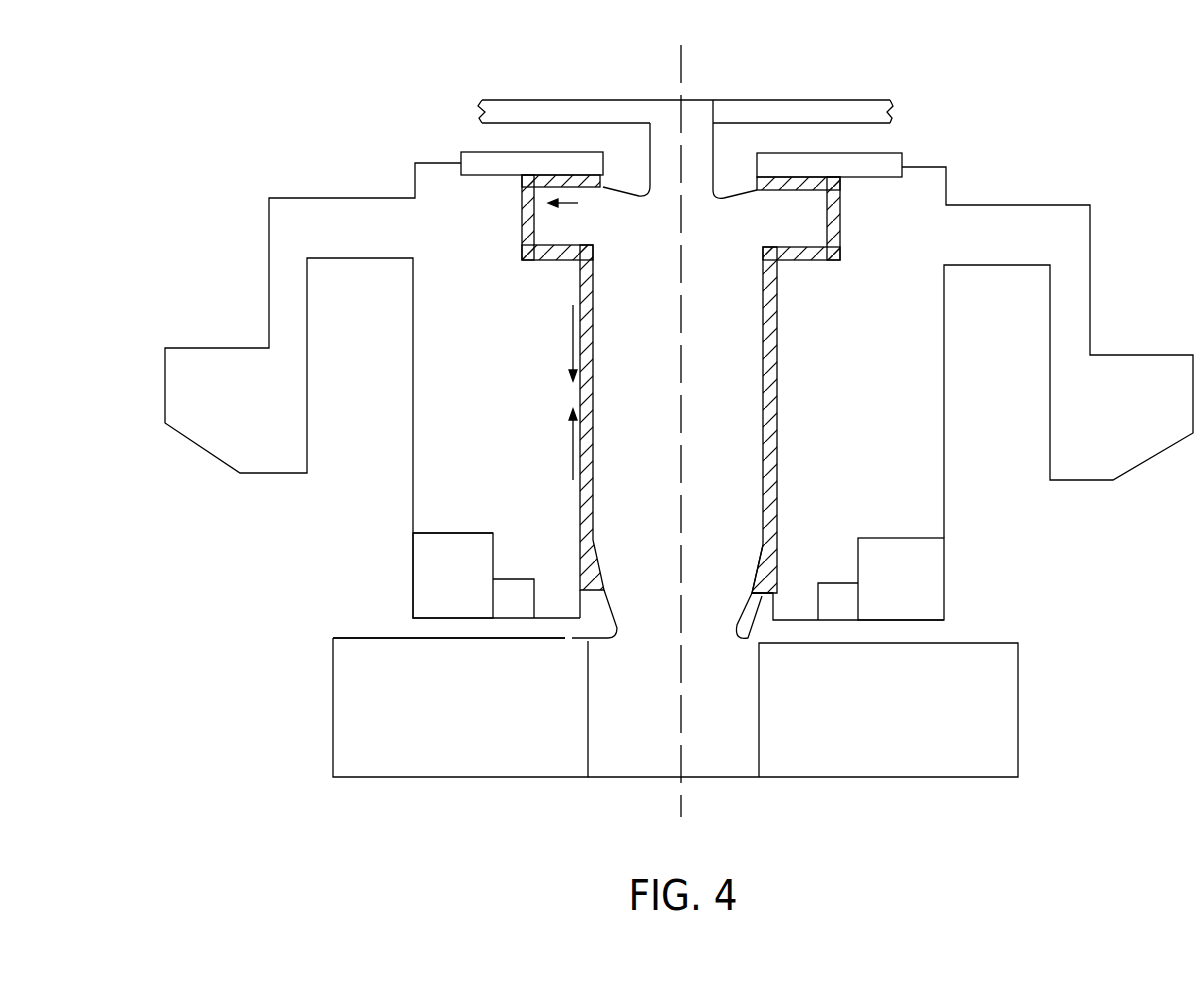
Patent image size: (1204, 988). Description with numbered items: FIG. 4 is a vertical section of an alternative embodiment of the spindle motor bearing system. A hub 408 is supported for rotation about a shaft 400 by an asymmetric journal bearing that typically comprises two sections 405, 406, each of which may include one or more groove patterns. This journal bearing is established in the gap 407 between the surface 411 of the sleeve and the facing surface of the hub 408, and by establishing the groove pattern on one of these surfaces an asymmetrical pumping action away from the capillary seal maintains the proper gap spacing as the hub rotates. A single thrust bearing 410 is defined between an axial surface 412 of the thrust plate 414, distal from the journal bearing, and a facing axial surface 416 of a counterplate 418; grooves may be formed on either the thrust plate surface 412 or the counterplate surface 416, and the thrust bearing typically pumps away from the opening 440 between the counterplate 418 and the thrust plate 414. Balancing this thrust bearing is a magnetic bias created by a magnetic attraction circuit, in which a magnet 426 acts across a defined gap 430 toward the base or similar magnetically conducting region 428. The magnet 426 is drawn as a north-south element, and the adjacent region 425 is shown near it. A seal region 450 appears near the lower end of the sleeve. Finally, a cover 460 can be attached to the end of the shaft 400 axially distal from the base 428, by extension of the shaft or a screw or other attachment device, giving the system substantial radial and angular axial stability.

The shaft 400 is at (730, 752).
The journal bearing section 405 is at (577, 348).
The journal bearing section 406 is at (575, 457).
The gap 407 is at (588, 288).
The hub 408 is at (360, 238).
The thrust bearing 410 is at (578, 204).
The surface of sleeve 411 is at (760, 565).
The axial surface 412 is at (533, 200).
The thrust plate 414 is at (555, 228).
The axial surface of counterplate 416 is at (531, 176).
The counterplate 418 is at (562, 163).
The magnet 425 is at (405, 582).
The magnet 426 is at (435, 553).
The base 428 is at (383, 745).
The gap 430 is at (433, 628).
The opening 440 is at (645, 188).
The seal 450 is at (748, 638).
The cover 460 is at (817, 108).